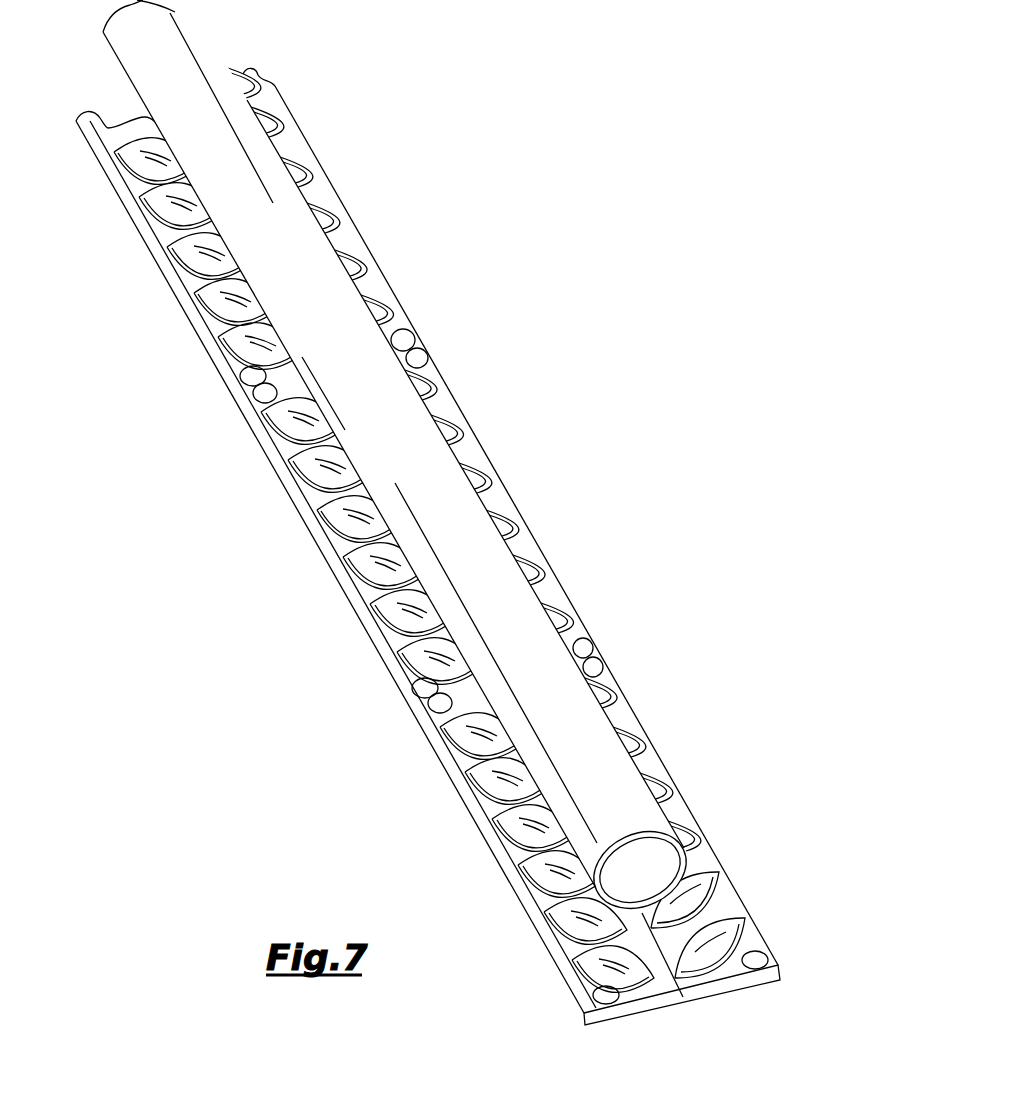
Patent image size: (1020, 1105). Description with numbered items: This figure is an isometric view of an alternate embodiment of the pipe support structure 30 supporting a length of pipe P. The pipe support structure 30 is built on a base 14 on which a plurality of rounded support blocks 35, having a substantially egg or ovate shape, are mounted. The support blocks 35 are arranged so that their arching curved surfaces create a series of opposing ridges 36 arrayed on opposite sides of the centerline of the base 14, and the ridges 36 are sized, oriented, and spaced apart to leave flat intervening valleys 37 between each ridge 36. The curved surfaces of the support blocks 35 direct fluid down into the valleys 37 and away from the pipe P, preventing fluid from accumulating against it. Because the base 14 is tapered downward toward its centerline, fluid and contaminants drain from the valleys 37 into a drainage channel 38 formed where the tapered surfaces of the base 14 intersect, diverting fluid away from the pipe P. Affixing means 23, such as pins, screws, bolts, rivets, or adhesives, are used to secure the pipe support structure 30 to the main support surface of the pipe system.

The base 14 is at (165, 262).
The affixing means 23 is at (256, 369).
The pipe support structure 30 is at (354, 160).
The support blocks 35 is at (152, 196).
The ridges 36 is at (292, 158).
The intervening valleys 37 is at (143, 226).
The drainage channel 38 is at (713, 963).
The pipe P is at (395, 428).